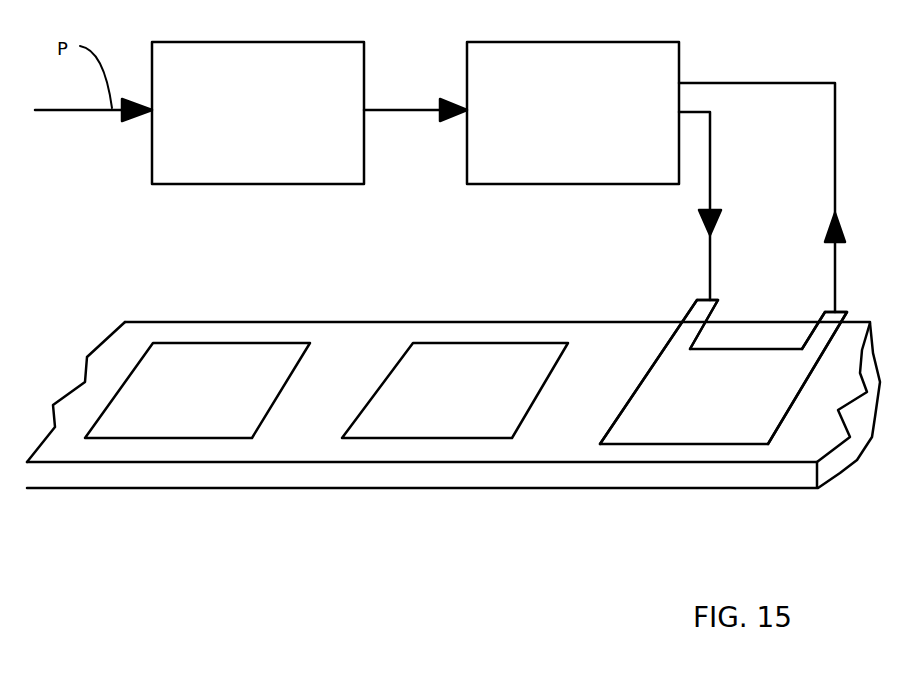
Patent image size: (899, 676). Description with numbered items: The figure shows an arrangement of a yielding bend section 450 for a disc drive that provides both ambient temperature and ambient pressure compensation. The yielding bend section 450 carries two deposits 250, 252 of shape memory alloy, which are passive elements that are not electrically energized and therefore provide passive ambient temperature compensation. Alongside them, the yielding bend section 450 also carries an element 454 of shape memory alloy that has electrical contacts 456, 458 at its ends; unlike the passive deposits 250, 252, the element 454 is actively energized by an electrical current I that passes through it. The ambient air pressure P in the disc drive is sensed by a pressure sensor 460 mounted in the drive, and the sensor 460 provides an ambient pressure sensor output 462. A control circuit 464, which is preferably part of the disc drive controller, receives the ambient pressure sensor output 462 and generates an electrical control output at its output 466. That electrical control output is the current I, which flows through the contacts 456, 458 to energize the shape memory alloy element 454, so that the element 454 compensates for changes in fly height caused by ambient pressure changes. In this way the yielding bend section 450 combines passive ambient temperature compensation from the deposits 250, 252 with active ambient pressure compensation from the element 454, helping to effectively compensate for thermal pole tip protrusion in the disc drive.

The deposit of shape memory alloy 250 is at (193, 410).
The deposit of shape memory alloy 252 is at (463, 404).
The yielding bend section 450 is at (295, 477).
The element of shape memory alloy 454 is at (735, 406).
The electrical contact 456 is at (693, 318).
The electrical contact 458 is at (822, 327).
The pressure sensor 460 is at (255, 123).
The ambient pressure sensor output 462 is at (403, 109).
The control circuit 464 is at (574, 128).
The output 466 is at (725, 56).